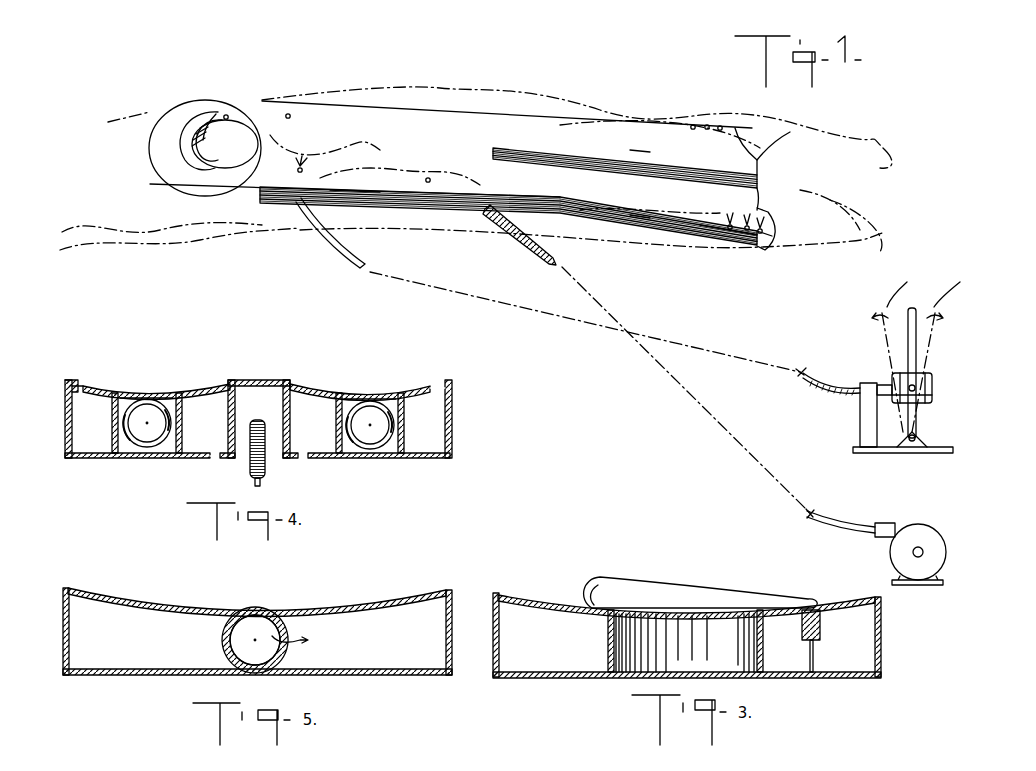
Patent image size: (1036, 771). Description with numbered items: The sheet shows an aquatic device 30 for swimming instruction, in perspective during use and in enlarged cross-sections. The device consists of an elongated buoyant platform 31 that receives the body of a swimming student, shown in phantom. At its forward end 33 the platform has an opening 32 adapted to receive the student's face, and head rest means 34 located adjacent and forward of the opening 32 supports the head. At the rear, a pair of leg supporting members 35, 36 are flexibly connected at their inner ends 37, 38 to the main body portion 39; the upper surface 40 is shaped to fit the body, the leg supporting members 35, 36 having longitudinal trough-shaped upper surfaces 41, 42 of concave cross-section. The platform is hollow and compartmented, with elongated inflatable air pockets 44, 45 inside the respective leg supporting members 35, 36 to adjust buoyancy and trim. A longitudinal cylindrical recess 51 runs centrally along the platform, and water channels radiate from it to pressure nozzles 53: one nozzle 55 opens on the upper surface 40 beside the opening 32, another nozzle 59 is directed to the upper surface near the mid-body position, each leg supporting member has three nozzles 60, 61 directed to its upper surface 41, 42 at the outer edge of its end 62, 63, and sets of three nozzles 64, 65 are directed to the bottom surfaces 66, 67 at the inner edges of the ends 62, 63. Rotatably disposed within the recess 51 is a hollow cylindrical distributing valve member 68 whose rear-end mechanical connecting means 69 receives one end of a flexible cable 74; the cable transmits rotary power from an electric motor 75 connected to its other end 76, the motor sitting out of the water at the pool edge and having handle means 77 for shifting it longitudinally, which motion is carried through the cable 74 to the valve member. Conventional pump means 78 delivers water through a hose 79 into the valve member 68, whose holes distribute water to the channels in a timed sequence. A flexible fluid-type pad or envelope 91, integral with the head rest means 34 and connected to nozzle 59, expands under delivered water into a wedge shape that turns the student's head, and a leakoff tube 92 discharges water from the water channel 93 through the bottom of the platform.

In FIG. 1, the aquatic device 30 is at (656, 250).
In FIG. 1, the elongated buoyant platform 31 is at (417, 207).
In FIG. 1, the opening 32 is at (213, 160).
In FIG. 3, the opening 32 is at (633, 677).
In FIG. 1, the forward end 33 is at (158, 150).
In FIG. 3, the forward end 33 is at (528, 600).
In FIG. 1, the head rest means 34 is at (180, 135).
In FIG. 3, the head rest means 34 is at (667, 587).
In FIG. 1, the leg supporting member 35 is at (740, 248).
In FIG. 4, the leg supporting member 35 is at (66, 428).
In FIG. 1, the leg supporting member 36 is at (762, 182).
In FIG. 4, the leg supporting member 36 is at (452, 428).
In FIG. 1, the inner end 37 is at (523, 212).
In FIG. 1, the inner end 38 is at (505, 150).
In FIG. 1, the main body portion 39 is at (430, 128).
In FIG. 5, the main body portion 39 is at (383, 603).
In FIG. 1, the upper surface 40 is at (354, 192).
In FIG. 1, the trough-shaped upper surface 41 is at (636, 226).
In FIG. 4, the trough-shaped upper surface 41 is at (145, 398).
In FIG. 1, the trough-shaped upper surface 42 is at (637, 140).
In FIG. 4, the trough-shaped upper surface 42 is at (368, 398).
In FIG. 4, the elongated air pocket 44 is at (155, 442).
In FIG. 4, the elongated air pocket 45 is at (363, 443).
In FIG. 5, the longitudinal cylindrical recess 51 is at (247, 625).
In FIG. 1, the pressure nozzles 53 is at (289, 114).
In FIG. 1, the nozzle 55 is at (226, 115).
In FIG. 1, the nozzle 59 is at (428, 183).
In FIG. 1, the nozzles 60 is at (770, 243).
In FIG. 4, the nozzles 60 is at (78, 388).
In FIG. 1, the nozzles 61 is at (722, 128).
In FIG. 4, the nozzles 61 is at (428, 388).
In FIG. 1, the end 62 is at (775, 215).
In FIG. 1, the end 63 is at (745, 140).
In FIG. 4, the nozzles 64 is at (212, 460).
In FIG. 4, the nozzles 65 is at (305, 460).
In FIG. 4, the bottom surface 66 is at (113, 458).
In FIG. 4, the bottom surface 67 is at (428, 460).
In FIG. 5, the distributing valve member 68 is at (225, 635).
In FIG. 4, the mechanical connecting means 69 is at (259, 422).
In FIG. 1, the flexible cable 74 is at (535, 254).
In FIG. 1, the electric motor 75 is at (918, 380).
In FIG. 1, the other end of the cable 76 is at (827, 384).
In FIG. 1, the handle means 77 is at (914, 330).
In FIG. 1, the pump means 78 is at (930, 538).
In FIG. 1, the hose 79 is at (355, 257).
In FIG. 1, the flexible fluid-type pad 91 is at (215, 120).
In FIG. 3, the flexible fluid-type pad 91 is at (617, 586).
In FIG. 3, the leakoff tube 92 is at (814, 658).
In FIG. 3, the water channel 93 is at (813, 626).